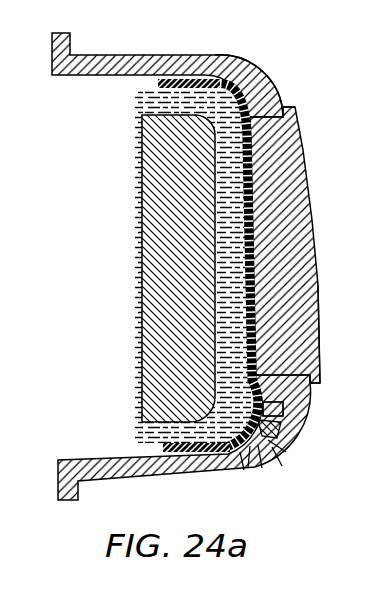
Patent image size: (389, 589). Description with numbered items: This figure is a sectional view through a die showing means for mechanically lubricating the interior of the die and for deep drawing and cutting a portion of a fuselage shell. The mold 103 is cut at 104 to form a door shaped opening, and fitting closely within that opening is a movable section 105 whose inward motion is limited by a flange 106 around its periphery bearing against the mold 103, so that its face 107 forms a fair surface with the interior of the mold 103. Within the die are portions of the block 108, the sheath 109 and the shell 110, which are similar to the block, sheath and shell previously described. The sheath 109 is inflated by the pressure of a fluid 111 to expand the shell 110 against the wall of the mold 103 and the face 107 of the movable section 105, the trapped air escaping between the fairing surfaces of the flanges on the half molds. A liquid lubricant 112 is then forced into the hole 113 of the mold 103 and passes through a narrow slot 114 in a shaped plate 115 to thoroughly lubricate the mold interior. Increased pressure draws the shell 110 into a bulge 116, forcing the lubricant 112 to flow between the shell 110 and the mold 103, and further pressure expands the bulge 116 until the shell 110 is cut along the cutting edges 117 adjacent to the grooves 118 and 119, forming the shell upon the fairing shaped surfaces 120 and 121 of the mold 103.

The mold 103 is at (260, 75).
The cut 104 is at (268, 368).
The movable section 105 is at (295, 238).
The flange 106 is at (295, 110).
The face 107 is at (250, 182).
The block 108 is at (152, 325).
The sheath 109 is at (222, 62).
The shell 110 is at (182, 85).
The fluid 111 is at (220, 205).
The liquid lubricant 112 is at (322, 376).
The hole 113 is at (276, 450).
The narrow slot 114 is at (275, 433).
The shaped plate 115 is at (278, 458).
The bulge 116 is at (157, 434).
The cutting edges 117 is at (244, 450).
The groove 118 is at (283, 411).
The groove 119 is at (254, 452).
The fairing shaped surface 120 is at (285, 363).
The fairing shaped surface 121 is at (248, 448).